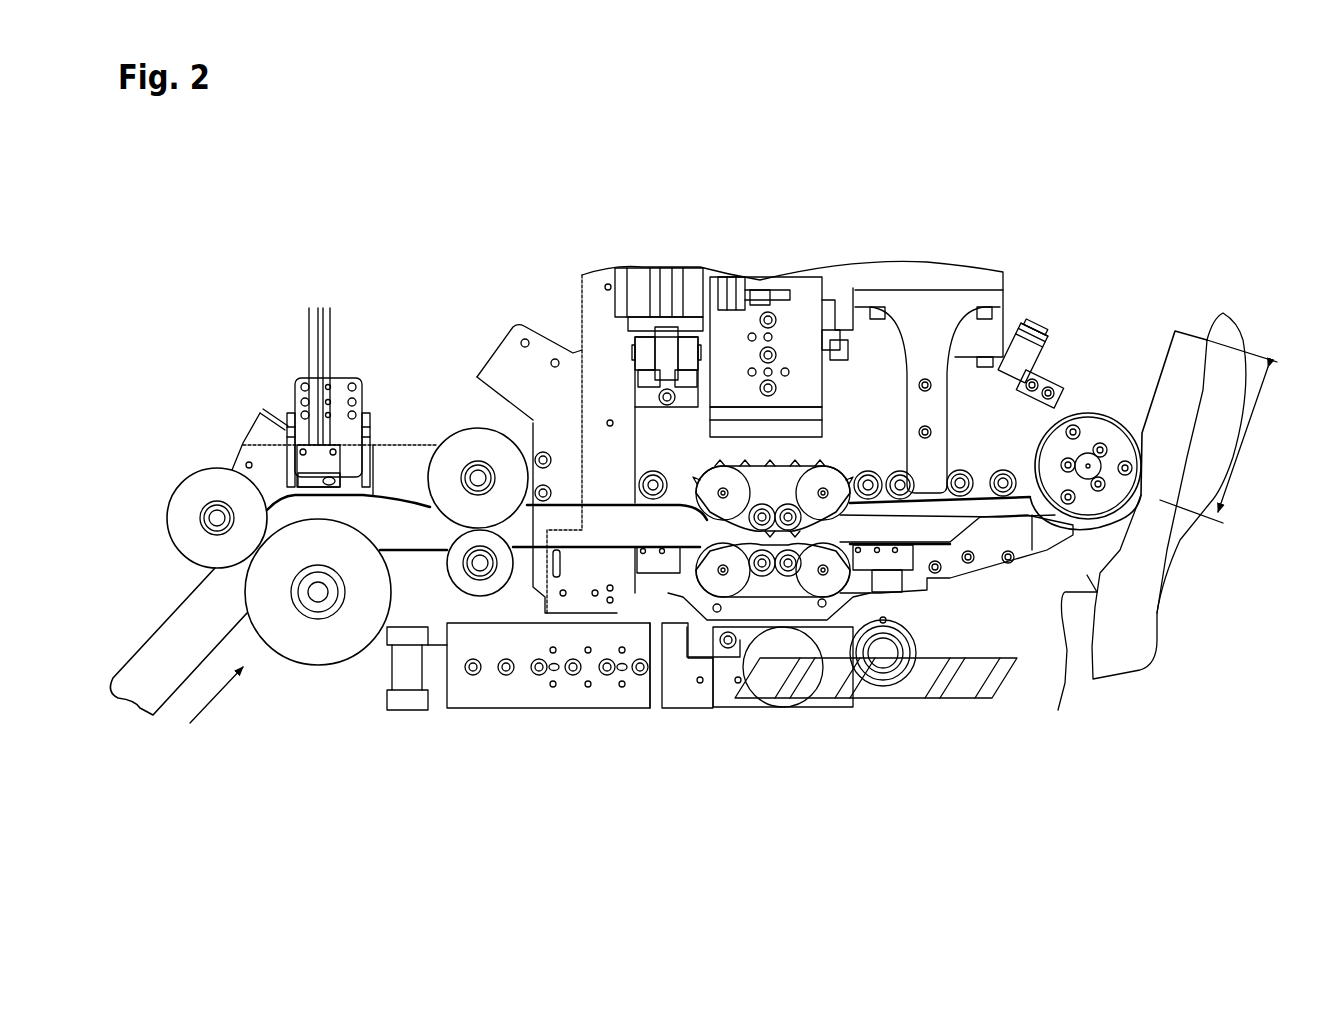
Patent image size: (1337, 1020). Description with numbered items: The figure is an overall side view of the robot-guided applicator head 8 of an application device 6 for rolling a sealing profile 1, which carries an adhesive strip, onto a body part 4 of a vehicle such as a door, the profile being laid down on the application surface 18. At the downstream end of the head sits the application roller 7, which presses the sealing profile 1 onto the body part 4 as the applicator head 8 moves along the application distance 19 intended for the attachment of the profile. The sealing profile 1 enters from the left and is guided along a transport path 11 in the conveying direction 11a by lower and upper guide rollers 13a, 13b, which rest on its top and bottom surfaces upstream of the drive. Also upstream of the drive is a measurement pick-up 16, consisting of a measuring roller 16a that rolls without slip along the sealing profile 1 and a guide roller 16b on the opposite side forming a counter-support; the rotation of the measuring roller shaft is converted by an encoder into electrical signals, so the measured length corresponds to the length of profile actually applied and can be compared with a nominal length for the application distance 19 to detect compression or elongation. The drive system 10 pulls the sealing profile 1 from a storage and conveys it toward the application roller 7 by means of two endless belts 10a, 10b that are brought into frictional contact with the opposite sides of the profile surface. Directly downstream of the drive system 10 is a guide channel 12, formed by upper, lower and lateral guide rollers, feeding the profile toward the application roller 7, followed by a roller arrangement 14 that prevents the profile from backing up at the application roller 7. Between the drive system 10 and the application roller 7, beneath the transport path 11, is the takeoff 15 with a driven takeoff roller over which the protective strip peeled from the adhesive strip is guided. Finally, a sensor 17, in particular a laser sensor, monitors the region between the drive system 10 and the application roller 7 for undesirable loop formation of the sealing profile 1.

The sealing profile 1 is at (165, 657).
The body part 4 is at (1133, 630).
The application device 6 is at (1188, 555).
The application roller 7 is at (1097, 423).
The applicator head 8 is at (899, 297).
The drive system 10 is at (751, 491).
The endless belt 10a is at (768, 468).
The endless belt 10b is at (773, 598).
The transport path 11 is at (237, 725).
The conveying direction 11a is at (208, 703).
The guide channel 12 is at (930, 598).
The guide roller 13a is at (200, 488).
The guide roller 13b is at (317, 640).
The roller arrangement 14 is at (1003, 470).
The takeoff 15 is at (907, 692).
The measurement pick-up 16 is at (457, 569).
The measuring roller 16a is at (482, 590).
The guide roller 16b is at (468, 453).
The sensor 17 is at (1023, 352).
The application surface 18 is at (1058, 710).
The application distance 19 is at (1240, 443).